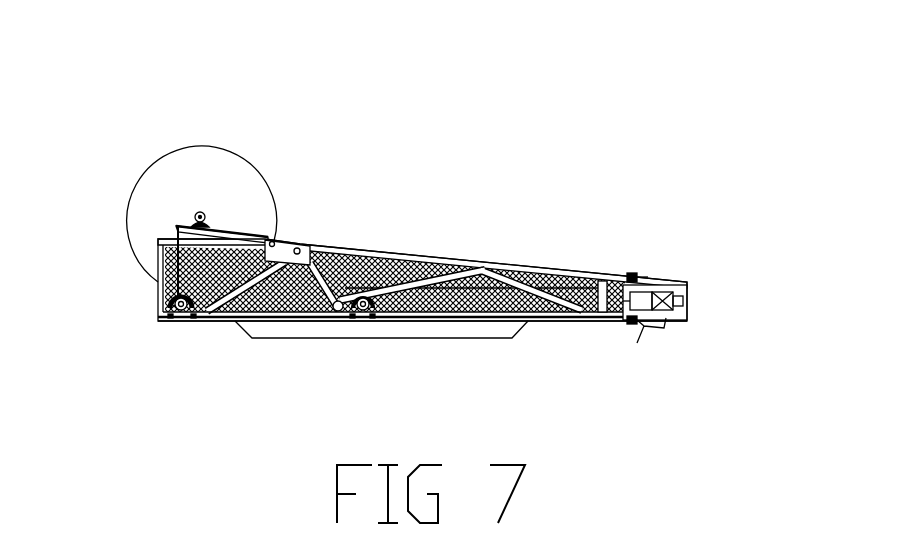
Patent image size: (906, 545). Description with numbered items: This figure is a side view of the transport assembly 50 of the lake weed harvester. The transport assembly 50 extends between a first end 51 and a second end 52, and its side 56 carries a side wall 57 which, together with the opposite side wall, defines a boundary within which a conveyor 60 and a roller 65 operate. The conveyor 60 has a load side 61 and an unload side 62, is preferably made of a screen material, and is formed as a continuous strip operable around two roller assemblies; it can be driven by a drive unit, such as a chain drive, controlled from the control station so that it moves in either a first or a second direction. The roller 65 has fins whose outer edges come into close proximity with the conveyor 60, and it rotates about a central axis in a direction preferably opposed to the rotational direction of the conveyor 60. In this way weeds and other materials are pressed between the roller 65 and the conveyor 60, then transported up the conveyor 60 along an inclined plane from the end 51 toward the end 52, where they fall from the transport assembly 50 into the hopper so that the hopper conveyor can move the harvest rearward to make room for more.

The transport assembly 50 is at (550, 193).
The end 51 is at (155, 300).
The end 52 is at (752, 300).
The side 56 is at (600, 272).
The side wall 57 is at (535, 271).
The conveyor 60 is at (443, 263).
The load side 61 is at (398, 253).
The unload side 62 is at (218, 322).
The roller 65 is at (300, 117).